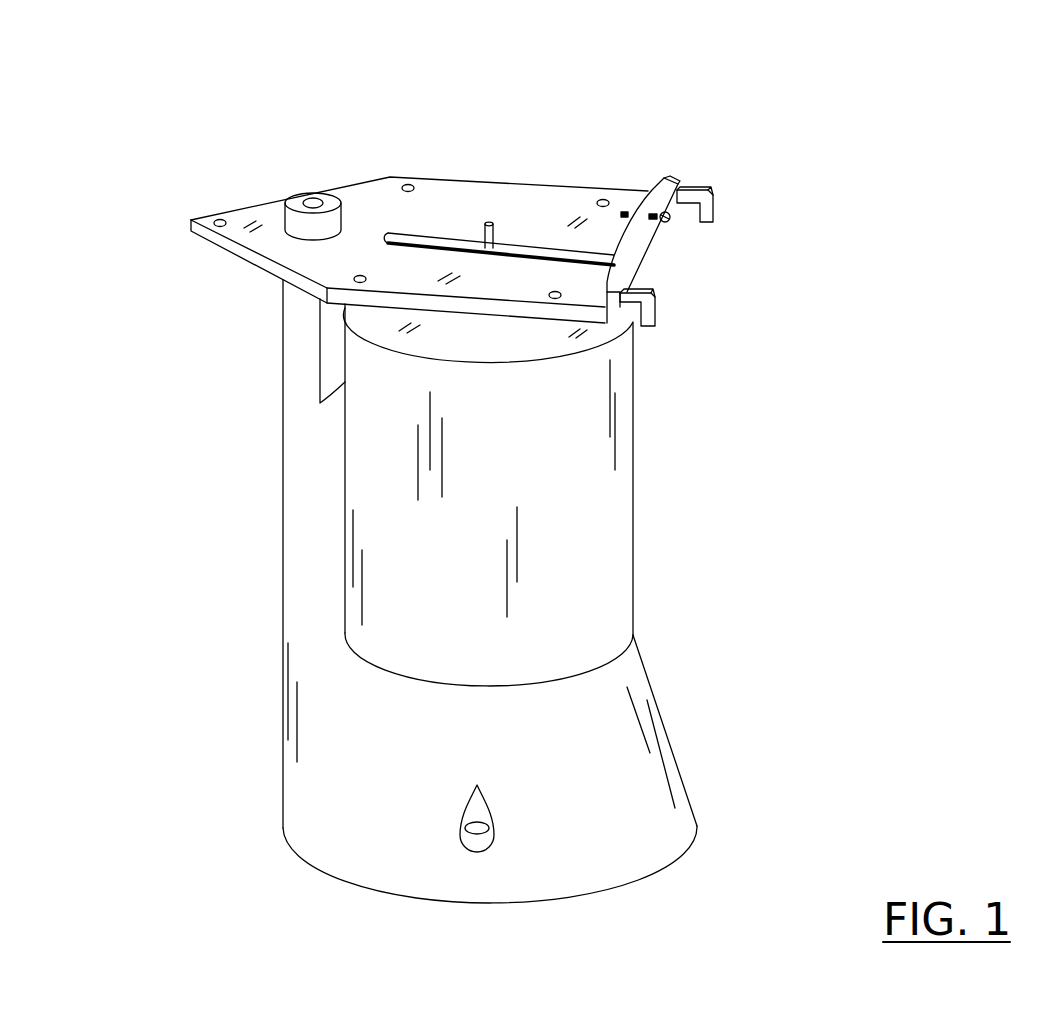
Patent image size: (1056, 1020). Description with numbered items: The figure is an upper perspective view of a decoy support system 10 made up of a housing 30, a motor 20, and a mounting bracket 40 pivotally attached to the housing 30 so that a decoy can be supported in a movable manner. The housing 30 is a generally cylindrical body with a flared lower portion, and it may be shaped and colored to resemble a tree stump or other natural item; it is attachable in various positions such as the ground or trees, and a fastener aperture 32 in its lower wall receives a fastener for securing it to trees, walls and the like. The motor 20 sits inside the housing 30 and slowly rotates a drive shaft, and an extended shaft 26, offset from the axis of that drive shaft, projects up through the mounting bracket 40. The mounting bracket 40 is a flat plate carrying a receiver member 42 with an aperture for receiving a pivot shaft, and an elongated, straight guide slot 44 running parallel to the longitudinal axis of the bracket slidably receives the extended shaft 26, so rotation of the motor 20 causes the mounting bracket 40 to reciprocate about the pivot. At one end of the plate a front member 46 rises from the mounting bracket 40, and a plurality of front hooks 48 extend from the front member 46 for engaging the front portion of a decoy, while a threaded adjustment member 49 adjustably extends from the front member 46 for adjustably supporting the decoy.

The decoy support system 10 is at (890, 160).
The motor 20 is at (617, 522).
The extended shaft 26 is at (490, 222).
The housing 30 is at (640, 683).
The fastener apertures 32 is at (467, 833).
The mounting bracket 40 is at (458, 192).
The receiver member 42 is at (298, 197).
The guide slot 44 is at (532, 243).
The front member 46 is at (640, 252).
The front hooks 48 is at (714, 202).
The threaded adjustment member 49 is at (668, 222).